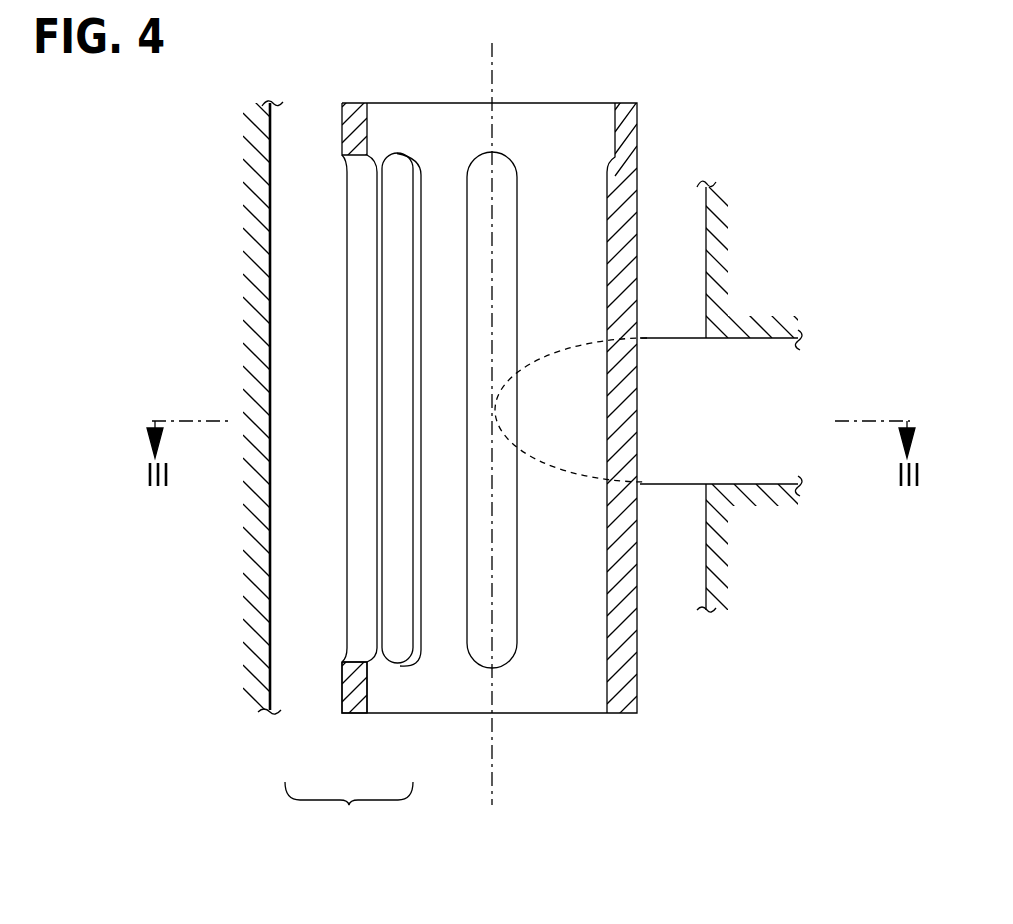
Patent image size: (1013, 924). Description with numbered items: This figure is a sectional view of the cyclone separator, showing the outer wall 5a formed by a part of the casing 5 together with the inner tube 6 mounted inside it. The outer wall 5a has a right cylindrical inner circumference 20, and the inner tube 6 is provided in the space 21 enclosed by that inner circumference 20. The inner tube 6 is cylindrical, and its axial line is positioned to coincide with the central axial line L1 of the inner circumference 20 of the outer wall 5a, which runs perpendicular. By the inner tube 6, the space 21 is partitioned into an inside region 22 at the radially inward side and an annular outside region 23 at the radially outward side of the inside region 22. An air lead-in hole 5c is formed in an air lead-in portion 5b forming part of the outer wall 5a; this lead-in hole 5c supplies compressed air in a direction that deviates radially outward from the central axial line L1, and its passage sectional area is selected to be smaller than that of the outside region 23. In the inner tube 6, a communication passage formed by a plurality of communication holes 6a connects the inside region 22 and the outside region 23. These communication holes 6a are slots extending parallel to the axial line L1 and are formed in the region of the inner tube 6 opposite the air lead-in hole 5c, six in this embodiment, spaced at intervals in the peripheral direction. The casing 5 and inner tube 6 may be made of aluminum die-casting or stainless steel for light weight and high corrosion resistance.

The casing 5 is at (270, 392).
The outer wall 5a is at (720, 262).
The air lead-in portion 5b is at (760, 490).
The air lead-in hole 5c is at (743, 405).
The inner tube 6 is at (655, 178).
The communication holes 6a is at (483, 212).
The inner circumference 20 is at (268, 514).
The space 21 is at (349, 811).
The inside region 22 is at (318, 692).
The outside region 23 is at (405, 702).
The central axial line L1 is at (492, 48).